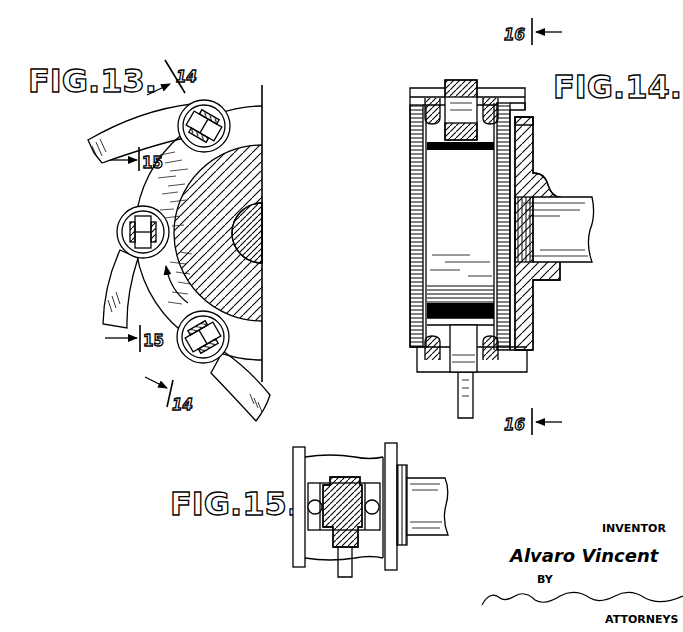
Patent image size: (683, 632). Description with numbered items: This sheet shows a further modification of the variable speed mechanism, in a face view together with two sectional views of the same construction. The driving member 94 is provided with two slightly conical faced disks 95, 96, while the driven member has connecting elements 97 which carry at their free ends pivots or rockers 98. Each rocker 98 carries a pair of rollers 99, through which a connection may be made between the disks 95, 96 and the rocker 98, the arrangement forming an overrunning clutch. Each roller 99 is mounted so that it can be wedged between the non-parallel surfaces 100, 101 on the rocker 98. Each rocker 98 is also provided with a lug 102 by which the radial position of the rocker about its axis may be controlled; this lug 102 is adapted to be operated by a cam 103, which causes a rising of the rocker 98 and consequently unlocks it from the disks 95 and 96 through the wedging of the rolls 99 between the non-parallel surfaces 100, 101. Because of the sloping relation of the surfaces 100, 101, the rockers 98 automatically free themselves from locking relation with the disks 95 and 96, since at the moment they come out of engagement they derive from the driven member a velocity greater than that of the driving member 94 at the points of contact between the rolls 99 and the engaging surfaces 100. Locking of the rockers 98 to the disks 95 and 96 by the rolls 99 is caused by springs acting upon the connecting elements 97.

In FIG. 13, the driving member 94 is at (262, 217).
In FIG. 14, the driving member 94 is at (576, 200).
In FIG. 15, the driving member 94 is at (422, 535).
In FIG. 14, the conical faced disk 95 is at (510, 162).
In FIG. 15, the conical faced disk 95 is at (393, 455).
In FIG. 13, the conical faced disk 96 is at (143, 190).
In FIG. 14, the conical faced disk 96 is at (410, 166).
In FIG. 15, the conical faced disk 96 is at (297, 462).
In FIG. 13, the connecting element 97 is at (113, 132).
In FIG. 14, the connecting element 97 is at (468, 403).
In FIG. 15, the connecting element 97 is at (347, 568).
In FIG. 13, the rocker 98 is at (201, 112).
In FIG. 14, the rocker 98 is at (476, 92).
In FIG. 15, the rocker 98 is at (343, 485).
In FIG. 13, the roller 99 is at (213, 106).
In FIG. 14, the roller 99 is at (430, 96).
In FIG. 15, the roller 99 is at (376, 505).
In FIG. 15, the non-parallel surface 100 is at (385, 450).
In FIG. 15, the non-parallel surface 101 is at (366, 482).
In FIG. 14, the lug 102 is at (521, 110).
In FIG. 14, the cam 103 is at (531, 125).